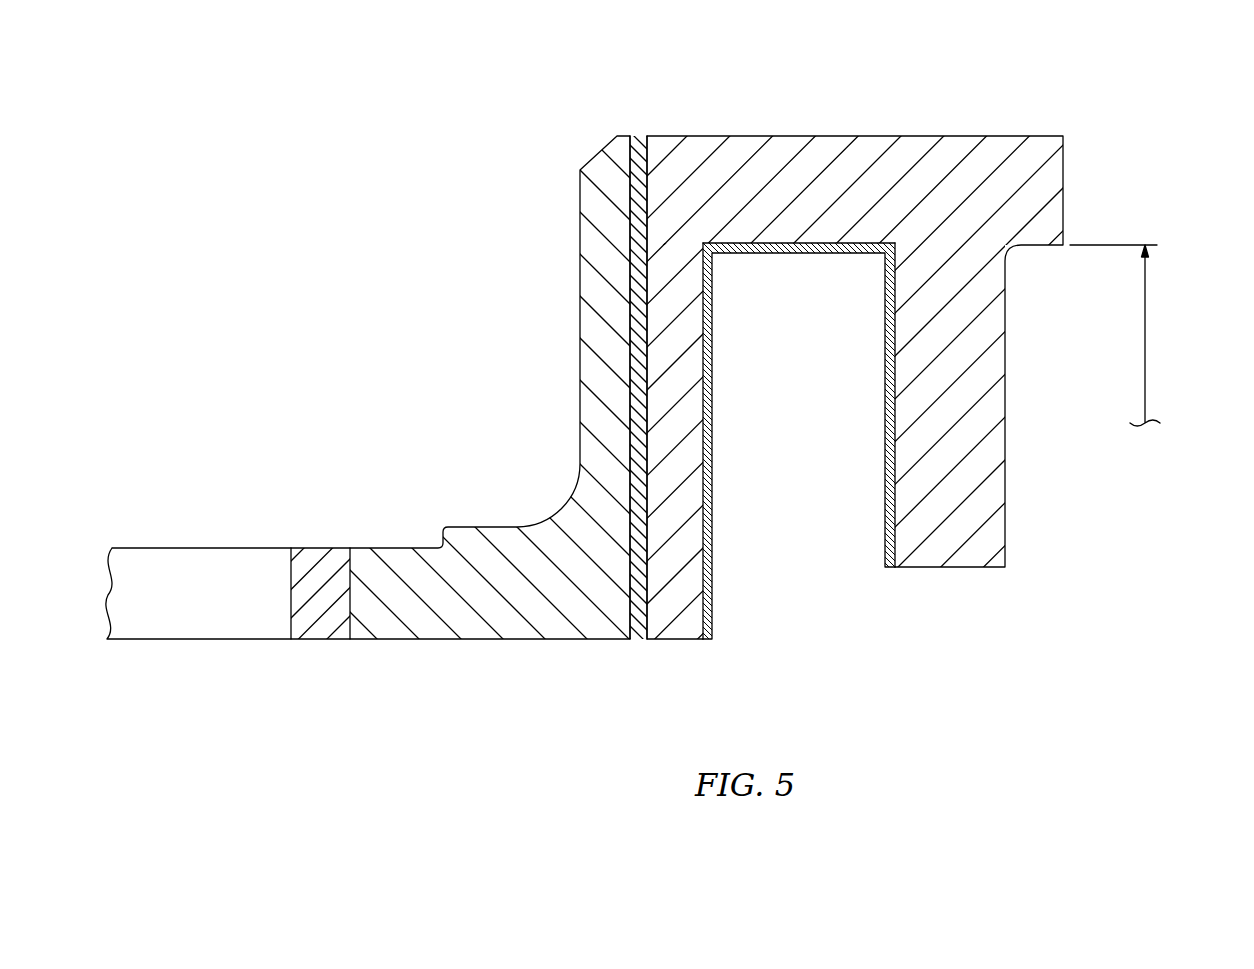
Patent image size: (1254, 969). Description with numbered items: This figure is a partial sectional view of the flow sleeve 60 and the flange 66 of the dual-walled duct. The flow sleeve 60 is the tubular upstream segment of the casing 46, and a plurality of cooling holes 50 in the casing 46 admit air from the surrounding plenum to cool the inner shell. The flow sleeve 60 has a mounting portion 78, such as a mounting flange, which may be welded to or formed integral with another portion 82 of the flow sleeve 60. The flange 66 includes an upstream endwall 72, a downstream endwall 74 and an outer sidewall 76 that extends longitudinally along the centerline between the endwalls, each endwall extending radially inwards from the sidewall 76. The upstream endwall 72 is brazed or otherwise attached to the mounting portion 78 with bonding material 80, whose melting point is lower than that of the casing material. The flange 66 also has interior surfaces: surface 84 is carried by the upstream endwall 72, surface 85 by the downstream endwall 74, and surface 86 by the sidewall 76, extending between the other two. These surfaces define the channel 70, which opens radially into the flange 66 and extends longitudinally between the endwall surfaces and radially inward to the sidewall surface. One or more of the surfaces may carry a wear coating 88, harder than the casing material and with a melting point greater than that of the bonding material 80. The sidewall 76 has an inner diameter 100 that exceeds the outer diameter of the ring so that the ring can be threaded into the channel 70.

The casing 46 is at (173, 494).
The cooling holes 50 is at (193, 623).
The flow sleeve 60 is at (391, 540).
The flange 66 is at (975, 130).
The channel 70 is at (775, 428).
The upstream endwall 72 is at (683, 640).
The downstream endwall 74 is at (1002, 483).
The outer sidewall 76 is at (848, 165).
The mounting portion 78 is at (580, 390).
The bonding material 80 is at (641, 136).
The another portion of the flow sleeve 82 is at (318, 642).
The interior surface 84 is at (715, 468).
The interior surface 85 is at (885, 495).
The interior surface 86 is at (770, 253).
The wear coating 88 is at (848, 253).
The inner diameter 100 is at (1147, 347).